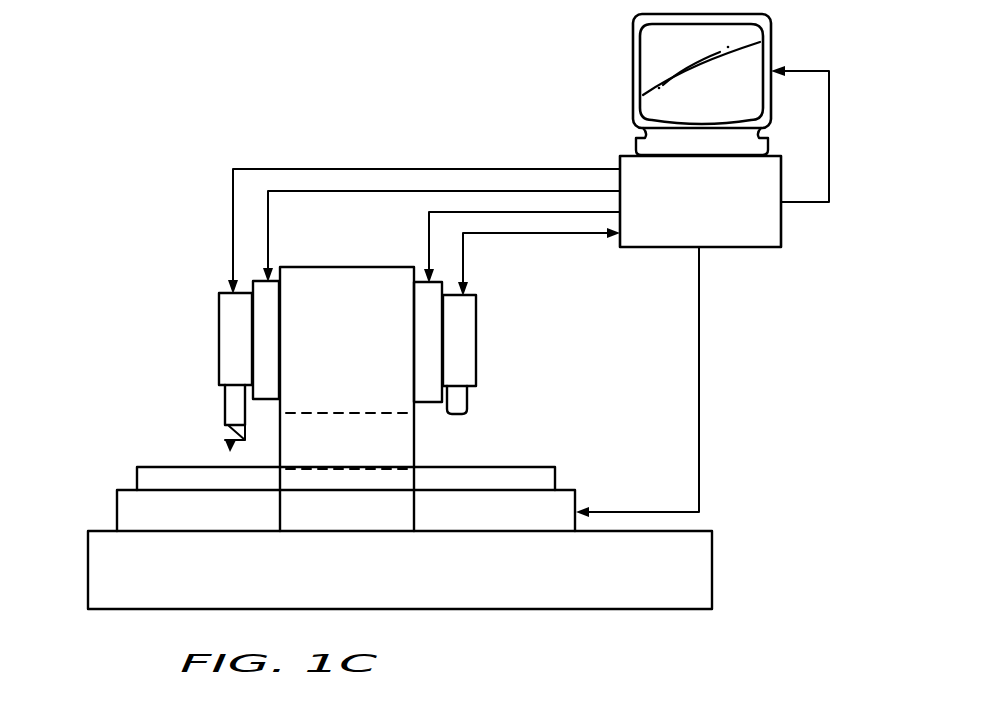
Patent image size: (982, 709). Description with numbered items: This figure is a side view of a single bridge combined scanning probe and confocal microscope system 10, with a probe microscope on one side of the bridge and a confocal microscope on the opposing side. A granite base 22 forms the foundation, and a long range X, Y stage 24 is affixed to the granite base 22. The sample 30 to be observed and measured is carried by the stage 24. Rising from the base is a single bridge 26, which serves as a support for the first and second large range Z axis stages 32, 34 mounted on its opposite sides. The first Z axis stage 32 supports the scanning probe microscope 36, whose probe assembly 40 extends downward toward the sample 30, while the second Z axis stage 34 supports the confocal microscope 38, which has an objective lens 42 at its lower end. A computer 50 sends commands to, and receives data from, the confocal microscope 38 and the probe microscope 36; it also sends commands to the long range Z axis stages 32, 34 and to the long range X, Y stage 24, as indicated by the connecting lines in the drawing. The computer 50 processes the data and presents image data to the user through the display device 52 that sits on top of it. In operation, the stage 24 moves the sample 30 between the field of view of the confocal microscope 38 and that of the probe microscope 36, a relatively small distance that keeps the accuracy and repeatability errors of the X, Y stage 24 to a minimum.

The machining system 10 is at (129, 242).
The granite base 22 is at (690, 565).
The long range X, Y stage 24 is at (117, 515).
The bridge 26 is at (343, 285).
The sample 30 is at (137, 480).
The long range Z axis stage 32 is at (263, 305).
The second large range Z axis stage 34 is at (428, 315).
The scanning probe microscope 36 is at (237, 350).
The confocal microscope 38 is at (459, 350).
The probe assembly 40 is at (228, 440).
The objective lens 42 is at (457, 398).
The computer 50 is at (753, 233).
The display device 52 is at (651, 40).